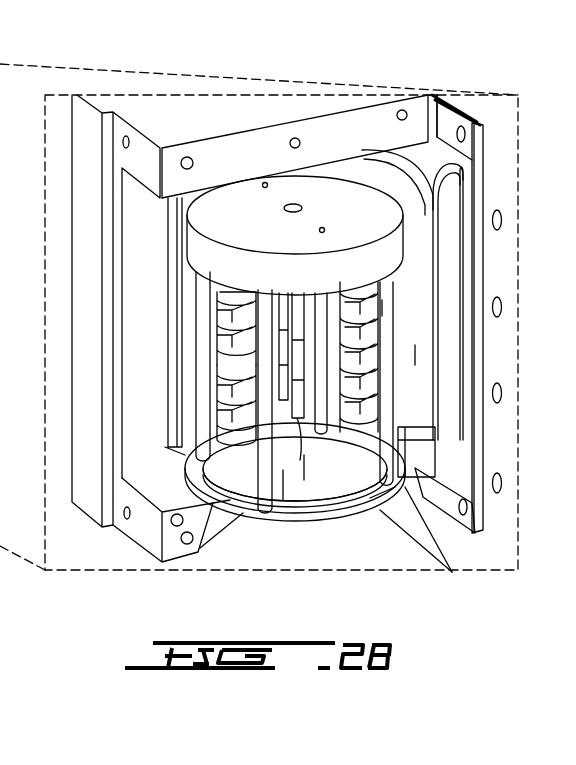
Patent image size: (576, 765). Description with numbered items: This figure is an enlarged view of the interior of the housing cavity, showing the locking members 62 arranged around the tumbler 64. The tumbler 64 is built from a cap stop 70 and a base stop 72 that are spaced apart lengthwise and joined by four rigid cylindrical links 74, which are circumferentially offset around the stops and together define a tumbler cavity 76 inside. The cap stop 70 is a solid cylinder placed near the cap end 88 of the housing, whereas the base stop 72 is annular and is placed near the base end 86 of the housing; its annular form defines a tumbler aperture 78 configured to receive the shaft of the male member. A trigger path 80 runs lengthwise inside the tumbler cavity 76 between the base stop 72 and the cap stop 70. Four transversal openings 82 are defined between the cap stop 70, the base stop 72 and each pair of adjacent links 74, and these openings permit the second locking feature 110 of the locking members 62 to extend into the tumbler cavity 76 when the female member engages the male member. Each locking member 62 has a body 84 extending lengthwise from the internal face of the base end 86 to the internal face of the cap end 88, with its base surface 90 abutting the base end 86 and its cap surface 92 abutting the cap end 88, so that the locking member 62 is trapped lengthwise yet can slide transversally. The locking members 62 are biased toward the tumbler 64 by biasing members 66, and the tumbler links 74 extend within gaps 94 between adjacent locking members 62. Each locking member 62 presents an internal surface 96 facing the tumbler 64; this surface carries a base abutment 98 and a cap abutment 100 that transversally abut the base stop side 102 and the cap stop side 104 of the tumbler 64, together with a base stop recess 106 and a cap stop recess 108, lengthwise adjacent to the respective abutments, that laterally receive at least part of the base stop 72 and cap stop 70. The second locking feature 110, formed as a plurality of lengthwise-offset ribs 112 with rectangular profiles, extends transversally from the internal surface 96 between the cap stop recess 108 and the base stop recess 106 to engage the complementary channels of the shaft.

The locking member 62 is at (457, 165).
The tumbler 64 is at (357, 193).
The biasing member 66 is at (467, 413).
The cap stop 70 is at (315, 202).
The base stop 72 is at (242, 510).
The rigid link 74 is at (400, 503).
The tumbler cavity 76 is at (227, 405).
The tumbler aperture 78 is at (302, 487).
The trigger path 80 is at (296, 428).
The transversal opening 82 is at (217, 327).
The body 84 is at (415, 355).
The base end 86 is at (152, 483).
The cap end 88 is at (182, 197).
The base surface 90 is at (457, 493).
The cap surface 92 is at (453, 177).
The gap 94 is at (310, 477).
The internal surface 96 is at (362, 375).
The base abutment 98 is at (423, 470).
The cap abutment 100 is at (410, 220).
The base stop side 102 is at (368, 505).
The cap stop side 104 is at (268, 268).
The base stop recess 106 is at (420, 435).
The cap stop recess 108 is at (407, 197).
The second locking feature 110 is at (400, 290).
The rib 112 is at (382, 308).